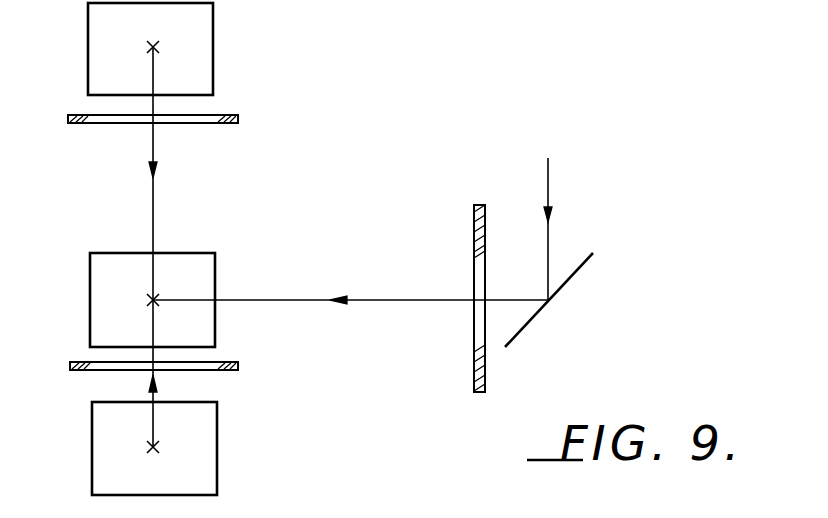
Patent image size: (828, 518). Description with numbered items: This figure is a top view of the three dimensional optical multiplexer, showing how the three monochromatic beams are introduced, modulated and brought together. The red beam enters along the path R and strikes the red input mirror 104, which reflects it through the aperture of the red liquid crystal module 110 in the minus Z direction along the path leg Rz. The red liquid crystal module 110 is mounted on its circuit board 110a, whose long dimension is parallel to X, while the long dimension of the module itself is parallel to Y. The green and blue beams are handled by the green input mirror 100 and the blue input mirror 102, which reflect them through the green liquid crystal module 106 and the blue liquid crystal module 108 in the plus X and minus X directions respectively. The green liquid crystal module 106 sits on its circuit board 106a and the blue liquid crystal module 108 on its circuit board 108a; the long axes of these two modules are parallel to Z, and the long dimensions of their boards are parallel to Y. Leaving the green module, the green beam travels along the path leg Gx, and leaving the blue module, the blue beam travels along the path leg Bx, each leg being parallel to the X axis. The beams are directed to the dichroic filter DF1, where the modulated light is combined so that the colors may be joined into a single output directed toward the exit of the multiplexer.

The green input mirror 100 is at (217, 445).
The blue input mirror 102 is at (213, 80).
The red input mirror 104 is at (579, 270).
The green liquid crystal module 106 is at (100, 372).
The circuit board 106a is at (270, 378).
The blue liquid crystal module 108 is at (100, 124).
The circuit board 108a is at (250, 127).
The red liquid crystal module 110 is at (474, 265).
The circuit board 110a is at (485, 380).
The dichroic filter DF1 is at (190, 253).
The blue beam optical path leg Bx is at (155, 147).
The green beam optical path leg Gx is at (155, 392).
The red beam optical path leg Rz is at (363, 301).
The red input beam path R is at (548, 193).